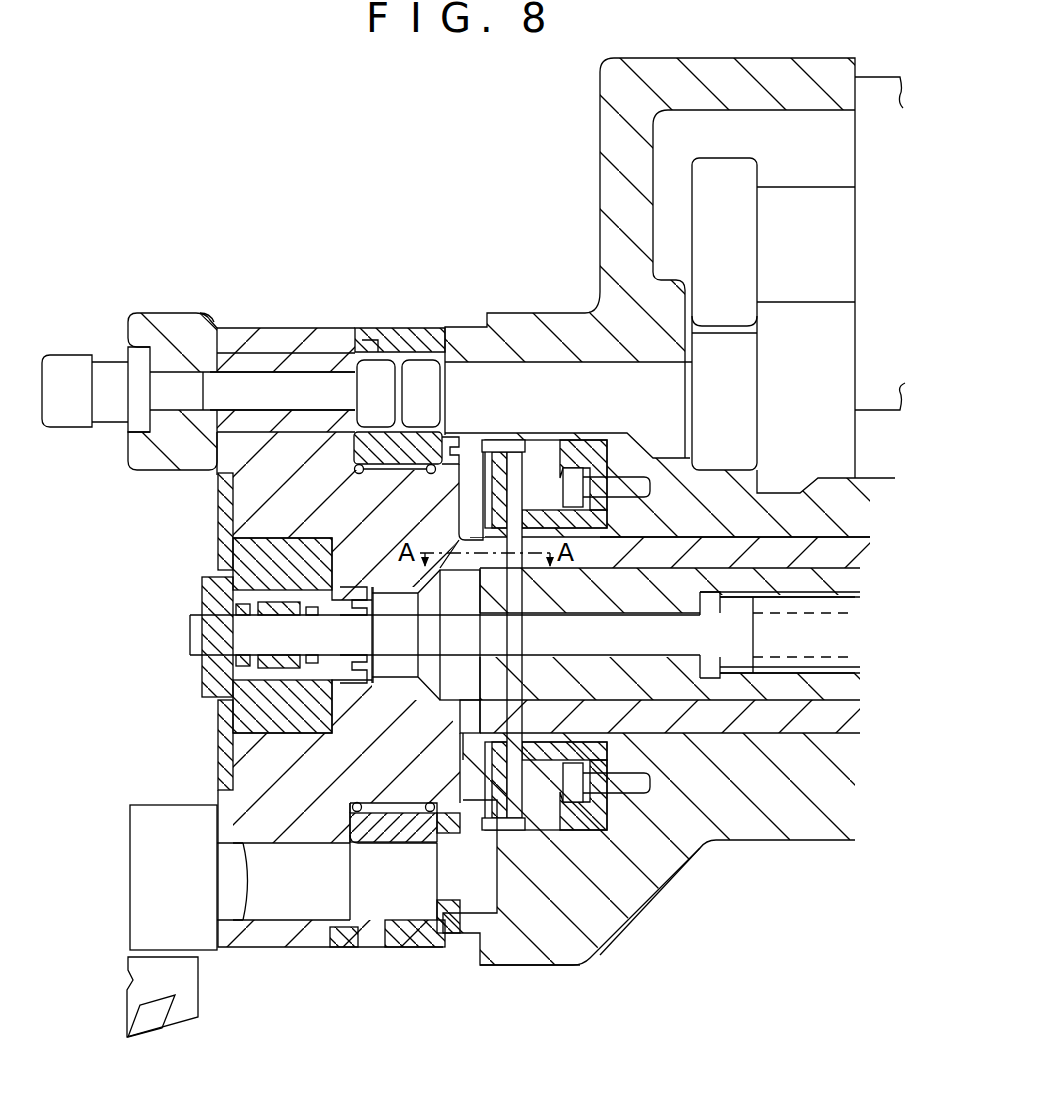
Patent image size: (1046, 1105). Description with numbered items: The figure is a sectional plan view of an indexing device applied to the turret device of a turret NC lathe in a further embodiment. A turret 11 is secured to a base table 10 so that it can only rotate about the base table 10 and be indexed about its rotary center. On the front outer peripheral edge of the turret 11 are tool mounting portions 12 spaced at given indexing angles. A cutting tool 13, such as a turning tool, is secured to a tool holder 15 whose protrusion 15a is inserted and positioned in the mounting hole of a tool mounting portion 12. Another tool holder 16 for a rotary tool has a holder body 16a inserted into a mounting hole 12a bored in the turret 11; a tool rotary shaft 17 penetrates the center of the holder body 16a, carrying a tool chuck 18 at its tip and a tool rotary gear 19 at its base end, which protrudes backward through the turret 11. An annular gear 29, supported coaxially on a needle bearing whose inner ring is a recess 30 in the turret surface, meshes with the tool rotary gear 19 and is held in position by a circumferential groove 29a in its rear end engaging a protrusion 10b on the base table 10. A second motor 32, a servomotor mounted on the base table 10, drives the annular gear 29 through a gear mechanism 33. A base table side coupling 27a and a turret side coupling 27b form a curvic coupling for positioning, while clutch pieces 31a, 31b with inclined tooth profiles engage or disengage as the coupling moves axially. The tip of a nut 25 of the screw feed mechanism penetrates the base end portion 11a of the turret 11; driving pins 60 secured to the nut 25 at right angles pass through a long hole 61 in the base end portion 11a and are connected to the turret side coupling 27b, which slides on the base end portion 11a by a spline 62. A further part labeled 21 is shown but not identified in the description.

The base table 10 is at (546, 304).
The protrusion 10b is at (440, 850).
The turret 11 is at (291, 955).
The base end portion 11a is at (692, 717).
The tool mounting portion 12 is at (212, 871).
The mounting hole 12a is at (264, 370).
The cutting tool 13 is at (172, 1032).
The tool holder 15 is at (148, 910).
The protrusion 15a is at (229, 910).
The tool holder 16 is at (163, 304).
The holder body 16a is at (203, 318).
The tool rotary shaft 17 is at (318, 384).
The tool chuck 18 is at (80, 356).
The tool rotary gear 19 is at (381, 346).
The shaft 21 is at (810, 643).
The nut 25 is at (735, 687).
The base table side coupling 27a is at (618, 820).
The turret side coupling 27b is at (540, 835).
The annular gear 29 is at (403, 803).
The circumferential groove 29a is at (430, 857).
The recess 30 is at (367, 853).
The clutch piece 31a is at (530, 850).
The clutch piece 31b is at (487, 850).
The second motor 32 is at (880, 77).
The gear mechanism 33 is at (690, 202).
The driving pin 60 is at (520, 835).
The long hole 61 is at (480, 718).
The spline 62 is at (660, 835).